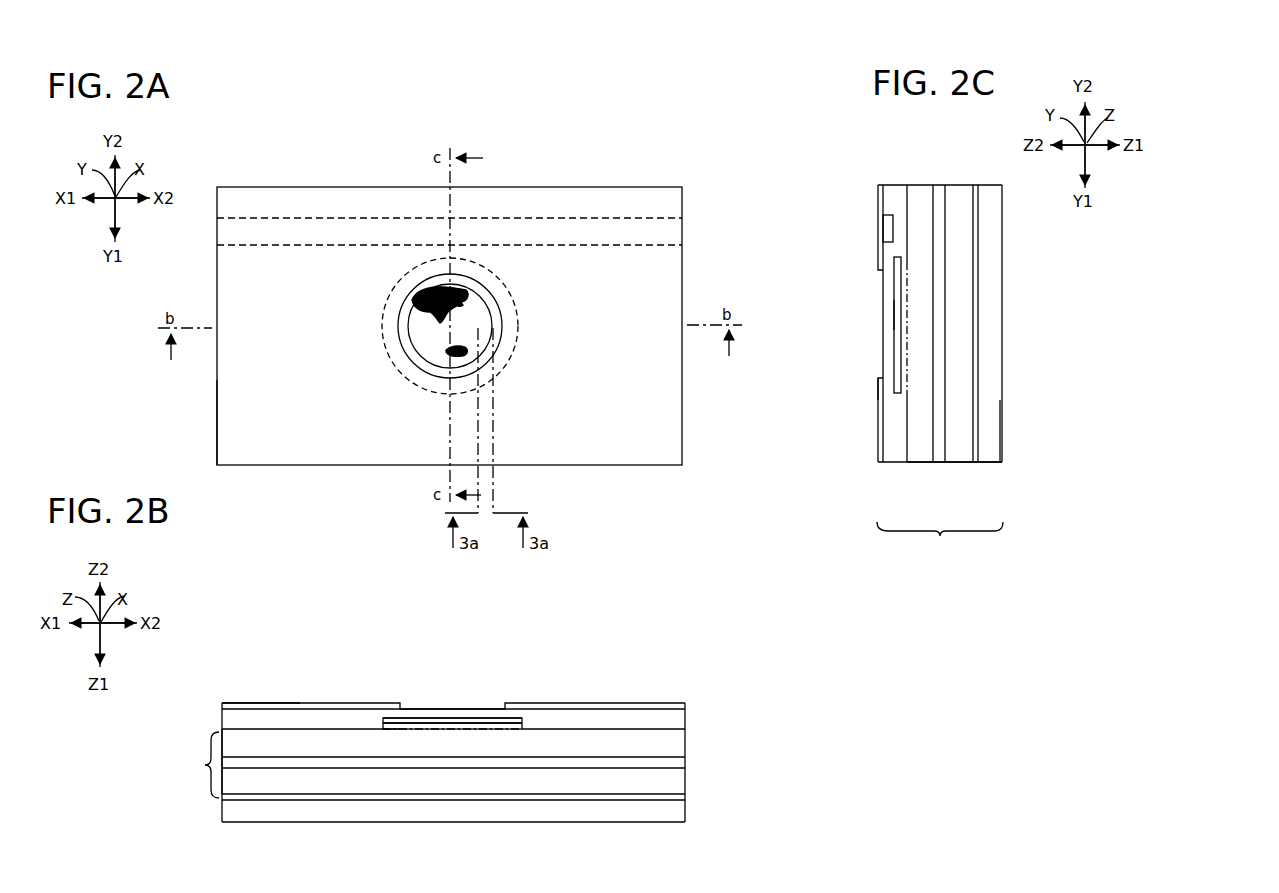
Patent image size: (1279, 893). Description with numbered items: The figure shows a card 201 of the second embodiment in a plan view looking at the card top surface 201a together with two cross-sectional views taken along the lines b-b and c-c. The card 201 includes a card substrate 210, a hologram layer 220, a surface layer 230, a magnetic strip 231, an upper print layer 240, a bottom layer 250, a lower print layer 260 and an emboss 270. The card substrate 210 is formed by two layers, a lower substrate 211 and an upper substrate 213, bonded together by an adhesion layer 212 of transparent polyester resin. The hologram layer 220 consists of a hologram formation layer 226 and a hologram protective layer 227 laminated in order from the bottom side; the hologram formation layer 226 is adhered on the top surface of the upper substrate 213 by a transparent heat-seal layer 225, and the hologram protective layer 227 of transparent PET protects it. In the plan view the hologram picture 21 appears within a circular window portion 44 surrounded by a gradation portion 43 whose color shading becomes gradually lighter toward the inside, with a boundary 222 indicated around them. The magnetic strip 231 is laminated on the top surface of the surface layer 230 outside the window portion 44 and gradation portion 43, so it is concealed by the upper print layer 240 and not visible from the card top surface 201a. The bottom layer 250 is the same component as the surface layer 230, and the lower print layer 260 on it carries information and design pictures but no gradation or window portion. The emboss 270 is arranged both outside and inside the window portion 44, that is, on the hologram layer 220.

In FIG. 2A, the card 201 is at (285, 125).
In FIG. 2A, the card top surface 201a is at (245, 434).
In FIG. 2B, the card top surface 201a is at (266, 703).
In FIG. 2A, the hologram picture 21 is at (460, 292).
In FIG. 2A, the hologram layer 220 is at (411, 276).
In FIG. 2C, the hologram layer 220 is at (890, 306).
In FIG. 2B, the hologram layer 220 is at (460, 708).
In FIG. 2A, the hologram region boundary 222 is at (389, 298).
In FIG. 2A, the magnetic strip 231 is at (568, 218).
In FIG. 2C, the magnetic strip 231 is at (888, 230).
In FIG. 2A, the emboss 270 is at (337, 380).
In FIG. 2C, the window portion 44 is at (876, 345).
In FIG. 2B, the window portion 44 is at (412, 692).
In FIG. 2C, the gradation portion 43 is at (874, 392).
In FIG. 2B, the gradation portion 43 is at (382, 690).
In FIG. 2B, the hologram protective layer 227 is at (474, 720).
In FIG. 2B, the hologram formation layer 226 is at (480, 725).
In FIG. 2B, the heat-seal layer 225 is at (496, 730).
In FIG. 2C, the upper print layer 240 is at (880, 455).
In FIG. 2B, the upper print layer 240 is at (700, 705).
In FIG. 2C, the surface layer 230 is at (897, 456).
In FIG. 2B, the surface layer 230 is at (688, 720).
In FIG. 2C, the upper substrate 213 is at (922, 456).
In FIG. 2B, the upper substrate 213 is at (688, 742).
In FIG. 2C, the adhesion layer 212 is at (940, 456).
In FIG. 2B, the adhesion layer 212 is at (688, 762).
In FIG. 2C, the lower substrate 211 is at (960, 456).
In FIG. 2B, the lower substrate 211 is at (688, 780).
In FIG. 2C, the lower print layer 260 is at (978, 458).
In FIG. 2B, the lower print layer 260 is at (688, 797).
In FIG. 2C, the bottom layer 250 is at (1000, 455).
In FIG. 2B, the bottom layer 250 is at (688, 812).
In FIG. 2C, the card substrate 210 is at (940, 511).
In FIG. 2B, the card substrate 210 is at (164, 763).